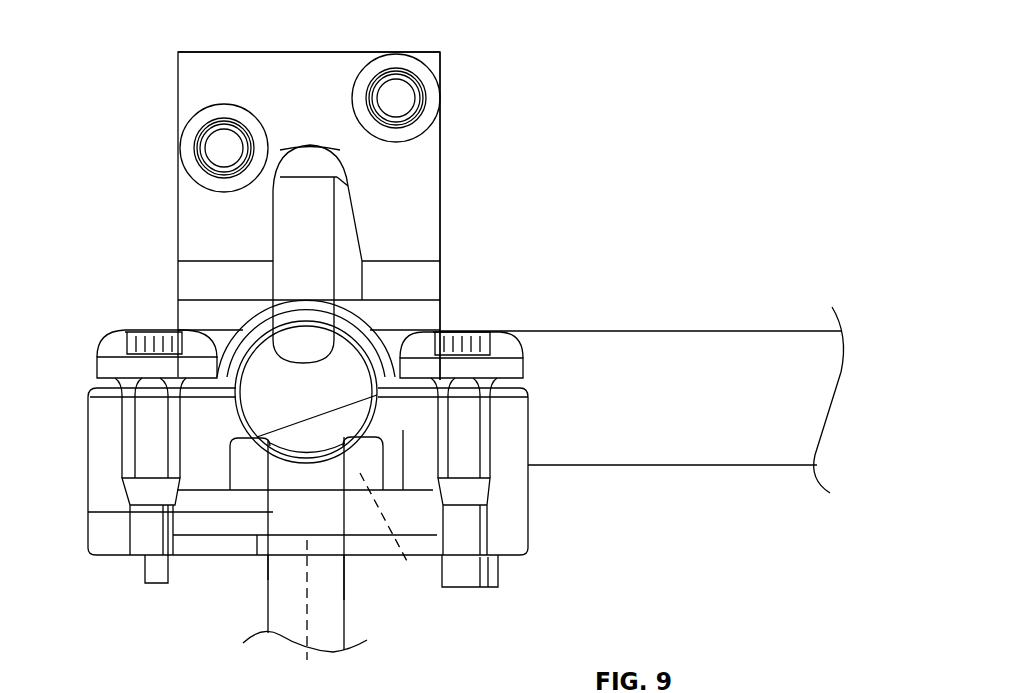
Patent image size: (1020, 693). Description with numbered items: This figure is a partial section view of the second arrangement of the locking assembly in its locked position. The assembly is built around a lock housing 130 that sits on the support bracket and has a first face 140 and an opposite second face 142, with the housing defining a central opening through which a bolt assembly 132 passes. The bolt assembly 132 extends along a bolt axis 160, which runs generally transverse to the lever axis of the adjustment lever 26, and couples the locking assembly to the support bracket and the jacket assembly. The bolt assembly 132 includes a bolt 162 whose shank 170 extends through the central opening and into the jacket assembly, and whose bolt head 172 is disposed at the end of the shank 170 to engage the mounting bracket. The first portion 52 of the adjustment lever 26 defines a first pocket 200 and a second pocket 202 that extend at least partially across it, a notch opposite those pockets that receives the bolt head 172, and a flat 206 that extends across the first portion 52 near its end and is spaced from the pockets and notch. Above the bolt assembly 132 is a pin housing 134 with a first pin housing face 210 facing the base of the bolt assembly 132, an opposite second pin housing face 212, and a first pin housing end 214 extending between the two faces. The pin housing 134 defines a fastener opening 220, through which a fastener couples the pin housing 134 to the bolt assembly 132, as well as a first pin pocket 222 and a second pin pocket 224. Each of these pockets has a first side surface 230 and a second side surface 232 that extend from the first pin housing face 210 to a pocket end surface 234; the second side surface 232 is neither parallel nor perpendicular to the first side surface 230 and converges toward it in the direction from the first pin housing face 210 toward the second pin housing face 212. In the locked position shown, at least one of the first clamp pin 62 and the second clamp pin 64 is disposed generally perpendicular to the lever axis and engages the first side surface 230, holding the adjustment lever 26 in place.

The adjustment lever 26 is at (642, 376).
The first portion 52 is at (627, 341).
The first clamp pin 62 is at (256, 223).
The second clamp pin 64 is at (256, 223).
The lock housing 130 is at (322, 474).
The bolt assembly 132 is at (351, 594).
The pin housing 134 is at (446, 136).
The first face 140 is at (92, 399).
The second face 142 is at (113, 553).
The bolt axis 160 is at (310, 548).
The bolt 162 is at (264, 568).
The shank 170 is at (345, 618).
The bolt head 172 is at (396, 537).
The first pocket 200 is at (222, 338).
The second pocket 202 is at (303, 354).
The flat 206 is at (313, 413).
The first pin housing face 210 is at (420, 300).
The second pin housing face 212 is at (250, 52).
The first pin housing end 214 is at (422, 194).
The fastener opening 220 is at (432, 68).
The first pin pocket 222 is at (363, 253).
The second pin pocket 224 is at (344, 278).
The first side surface 230 is at (315, 223).
The second side surface 232 is at (350, 178).
The pocket end surface 234 is at (305, 143).